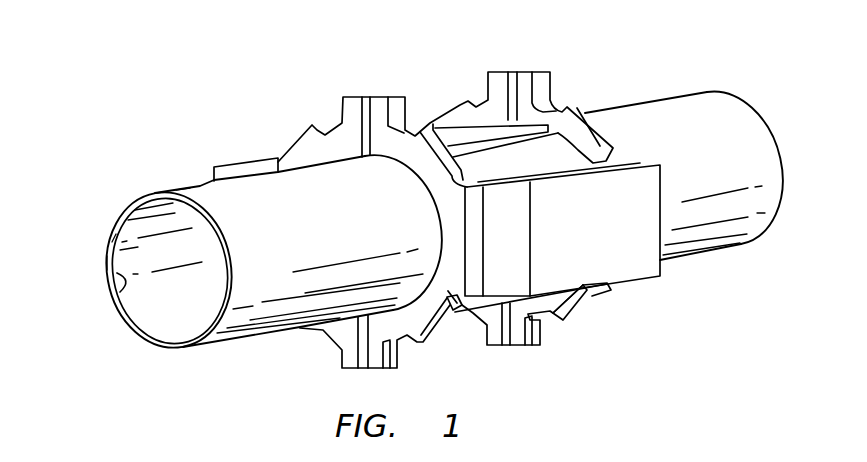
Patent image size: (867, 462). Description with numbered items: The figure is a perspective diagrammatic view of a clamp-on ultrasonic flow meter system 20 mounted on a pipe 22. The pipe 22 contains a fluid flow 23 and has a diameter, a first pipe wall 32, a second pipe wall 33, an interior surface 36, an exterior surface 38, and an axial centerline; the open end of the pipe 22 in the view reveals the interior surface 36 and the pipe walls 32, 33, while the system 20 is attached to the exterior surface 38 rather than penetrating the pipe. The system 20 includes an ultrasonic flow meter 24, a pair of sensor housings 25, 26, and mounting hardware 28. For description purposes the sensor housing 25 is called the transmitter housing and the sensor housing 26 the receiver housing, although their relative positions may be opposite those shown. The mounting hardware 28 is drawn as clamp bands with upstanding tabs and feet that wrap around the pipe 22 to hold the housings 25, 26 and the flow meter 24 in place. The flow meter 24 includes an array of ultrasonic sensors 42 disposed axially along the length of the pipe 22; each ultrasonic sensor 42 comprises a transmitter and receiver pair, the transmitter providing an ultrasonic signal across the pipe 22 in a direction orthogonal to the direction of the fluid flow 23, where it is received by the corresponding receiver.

The ultrasonic flow meter system 20 is at (233, 73).
The pipe 22 is at (235, 341).
The fluid flow 23 is at (130, 253).
The ultrasonic flow meter 24 is at (640, 293).
The sensor housing 25 is at (227, 163).
The sensor housing 26 is at (653, 277).
The mounting hardware 28 is at (387, 97).
The first pipe wall 32 is at (108, 263).
The second pipe wall 33 is at (230, 282).
The interior surface 36 is at (118, 292).
The exterior surface 38 is at (182, 188).
The ultrasonic sensor 42 is at (560, 268).